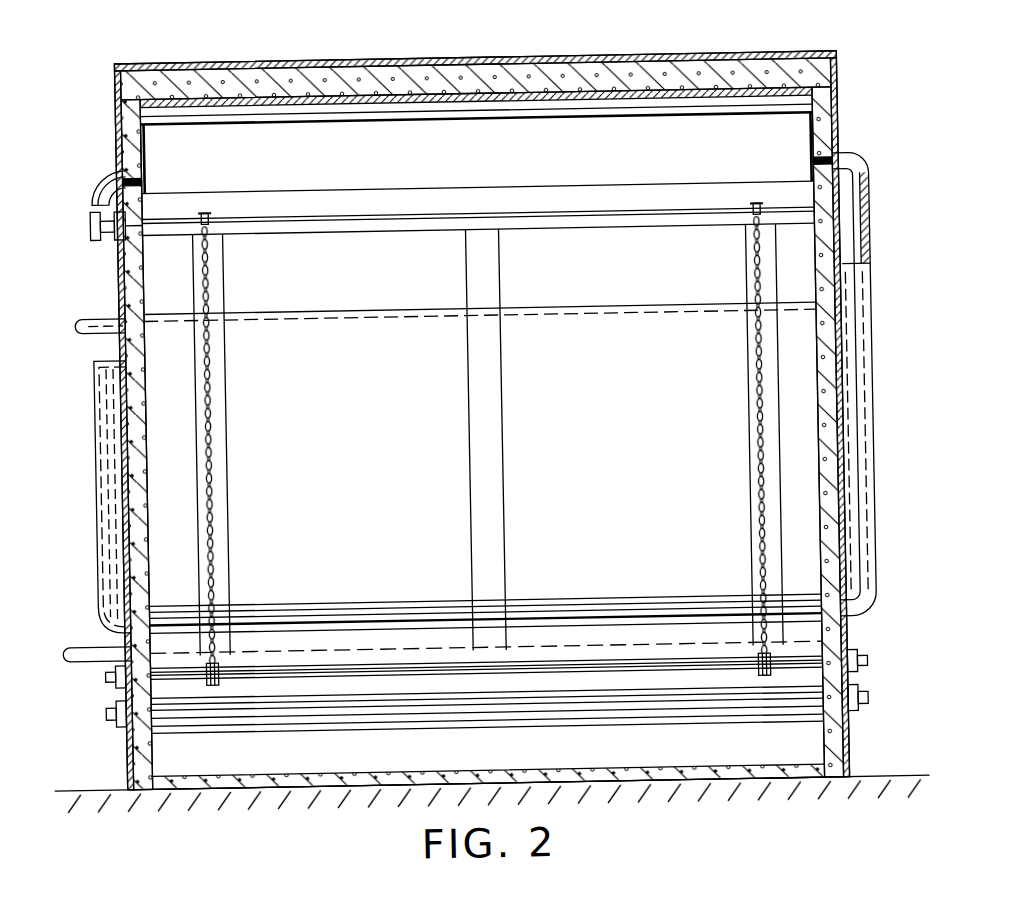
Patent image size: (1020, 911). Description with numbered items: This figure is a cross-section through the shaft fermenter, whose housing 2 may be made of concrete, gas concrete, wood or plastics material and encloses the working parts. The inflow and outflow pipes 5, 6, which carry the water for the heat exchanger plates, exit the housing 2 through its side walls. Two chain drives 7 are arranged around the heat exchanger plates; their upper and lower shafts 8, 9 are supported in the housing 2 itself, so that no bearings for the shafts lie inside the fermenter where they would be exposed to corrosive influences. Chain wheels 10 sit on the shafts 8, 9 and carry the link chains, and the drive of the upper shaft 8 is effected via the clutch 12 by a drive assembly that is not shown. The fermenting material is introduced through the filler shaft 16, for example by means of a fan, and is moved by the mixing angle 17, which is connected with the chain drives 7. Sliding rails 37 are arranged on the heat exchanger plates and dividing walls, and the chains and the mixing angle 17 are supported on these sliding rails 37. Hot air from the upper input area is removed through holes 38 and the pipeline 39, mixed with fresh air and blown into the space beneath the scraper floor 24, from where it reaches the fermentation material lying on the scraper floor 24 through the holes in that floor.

The housing 2 is at (783, 72).
The inflow pipe 5 is at (86, 313).
The outflow pipe 6 is at (75, 640).
The chain drive 7 is at (214, 505).
The upper shaft 8 is at (120, 236).
The lower shaft 9 is at (105, 676).
The chain wheel 10 is at (213, 207).
The clutch 12 is at (96, 231).
The filler shaft 16 is at (510, 160).
The mixing angle 17 is at (392, 603).
The scraper floor 24 is at (560, 695).
The sliding rail 37 is at (227, 400).
The hole 38 is at (140, 175).
The pipeline 39 is at (116, 165).